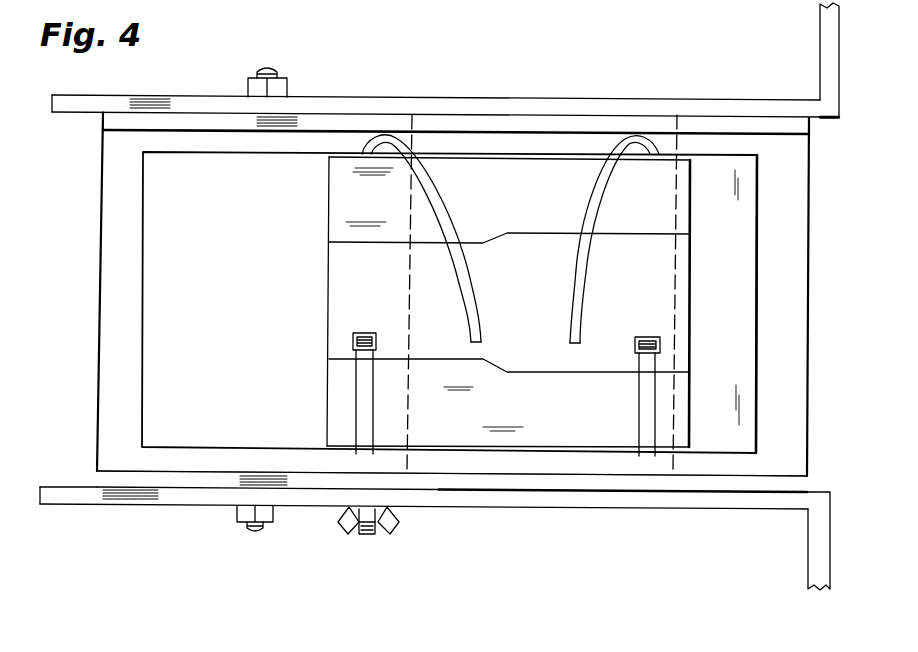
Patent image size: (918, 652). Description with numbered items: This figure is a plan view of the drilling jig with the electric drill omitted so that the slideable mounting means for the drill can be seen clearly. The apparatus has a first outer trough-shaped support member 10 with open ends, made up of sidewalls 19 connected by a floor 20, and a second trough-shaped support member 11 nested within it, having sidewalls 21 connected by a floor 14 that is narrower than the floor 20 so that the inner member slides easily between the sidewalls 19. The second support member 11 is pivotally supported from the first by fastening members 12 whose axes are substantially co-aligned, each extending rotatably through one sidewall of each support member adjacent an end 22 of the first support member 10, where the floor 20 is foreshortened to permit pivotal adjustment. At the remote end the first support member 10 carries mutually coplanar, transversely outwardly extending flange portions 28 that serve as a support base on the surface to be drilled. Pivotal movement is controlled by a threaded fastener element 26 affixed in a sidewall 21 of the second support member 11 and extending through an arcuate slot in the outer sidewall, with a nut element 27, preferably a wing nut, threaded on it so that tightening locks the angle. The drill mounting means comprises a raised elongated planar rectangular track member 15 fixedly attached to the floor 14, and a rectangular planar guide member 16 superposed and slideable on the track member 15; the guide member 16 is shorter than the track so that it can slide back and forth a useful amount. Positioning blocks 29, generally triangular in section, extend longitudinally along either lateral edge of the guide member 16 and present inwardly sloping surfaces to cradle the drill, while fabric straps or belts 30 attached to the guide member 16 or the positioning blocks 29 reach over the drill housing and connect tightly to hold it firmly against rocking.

The first outer trough-shaped support member 10 is at (608, 519).
The second trough-shaped support member 11 is at (438, 492).
The fastening members 12 is at (282, 80).
The floor 14 is at (102, 187).
The track member 15 is at (735, 343).
The guide member 16 is at (384, 293).
The sidewalls 19 is at (653, 108).
The floor 20 is at (674, 296).
The sidewalls 21 is at (483, 484).
The end 22 is at (55, 100).
The threaded fastener element 26 is at (368, 534).
The nut element 27 is at (349, 524).
The flange portions 28 is at (827, 31).
The positioning blocks 29 is at (339, 198).
The straps 30 is at (592, 207).